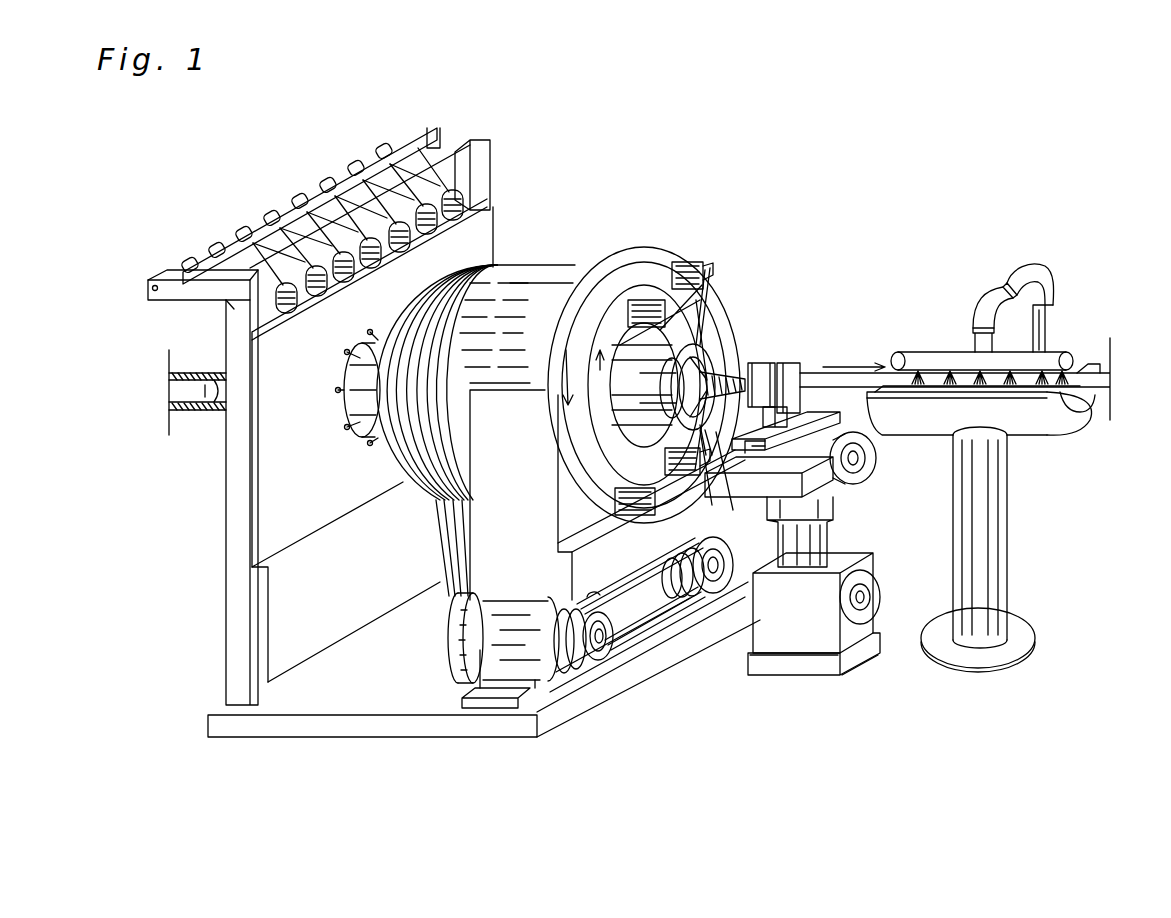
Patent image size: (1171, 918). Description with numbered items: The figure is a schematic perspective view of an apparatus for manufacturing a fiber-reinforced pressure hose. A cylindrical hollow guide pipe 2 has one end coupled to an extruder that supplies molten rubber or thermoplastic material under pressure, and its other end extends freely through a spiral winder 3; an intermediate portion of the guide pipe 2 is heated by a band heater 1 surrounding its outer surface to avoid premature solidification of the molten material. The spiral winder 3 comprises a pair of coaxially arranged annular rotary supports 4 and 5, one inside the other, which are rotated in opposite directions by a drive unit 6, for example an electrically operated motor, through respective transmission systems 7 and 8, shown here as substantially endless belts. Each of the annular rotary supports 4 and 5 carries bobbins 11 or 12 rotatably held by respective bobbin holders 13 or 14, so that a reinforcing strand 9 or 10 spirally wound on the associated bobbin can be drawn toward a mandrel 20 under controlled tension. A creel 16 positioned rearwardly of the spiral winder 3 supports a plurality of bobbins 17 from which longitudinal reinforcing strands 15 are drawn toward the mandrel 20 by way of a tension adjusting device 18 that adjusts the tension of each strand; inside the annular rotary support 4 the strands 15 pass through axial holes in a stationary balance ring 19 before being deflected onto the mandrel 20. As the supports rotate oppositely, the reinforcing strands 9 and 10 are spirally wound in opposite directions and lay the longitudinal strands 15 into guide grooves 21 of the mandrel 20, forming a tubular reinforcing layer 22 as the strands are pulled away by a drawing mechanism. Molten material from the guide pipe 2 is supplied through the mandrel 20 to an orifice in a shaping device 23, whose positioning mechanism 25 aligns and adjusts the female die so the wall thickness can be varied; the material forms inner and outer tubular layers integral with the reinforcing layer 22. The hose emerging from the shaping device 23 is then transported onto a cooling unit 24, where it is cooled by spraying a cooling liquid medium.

The band heater 1 is at (200, 373).
The guide pipe 2 is at (190, 403).
The spiral winder 3 is at (647, 234).
The annular rotary support 4 is at (597, 330).
The annular rotary support 5 is at (605, 292).
The drive unit 6 is at (458, 655).
The transmission system 7 is at (440, 563).
The transmission system 8 is at (642, 630).
The reinforcing strand 9 is at (702, 352).
The reinforcing strand 10 is at (712, 333).
The bobbin 11 is at (637, 297).
The bobbin 12 is at (678, 262).
The bobbin holder 13 is at (674, 310).
The bobbin holder 14 is at (707, 264).
The longitudinal reinforcing strand 15 is at (432, 167).
The creel 16 is at (483, 170).
The bobbin 17 is at (482, 192).
The tension adjusting device 18 is at (358, 167).
The balance ring 19 is at (707, 483).
The mandrel 20 is at (739, 489).
The guide groove 21 is at (737, 378).
The reinforcing layer 22 is at (775, 415).
The shaping device 23 is at (790, 355).
The cooling unit 24 is at (925, 352).
The positioning mechanism 25 is at (822, 497).